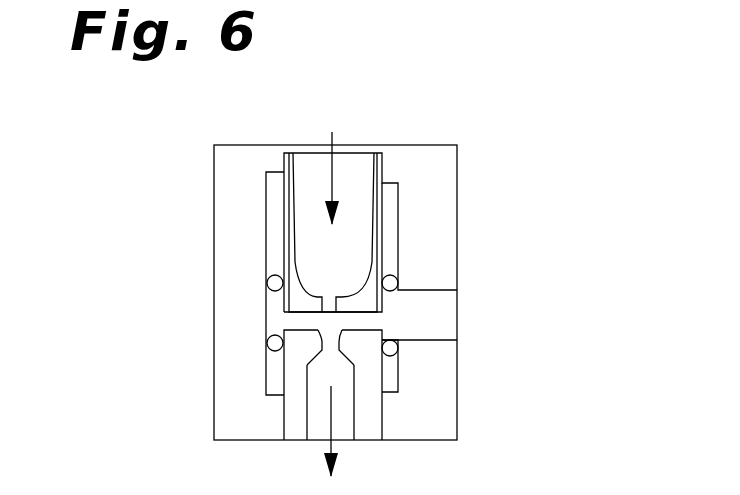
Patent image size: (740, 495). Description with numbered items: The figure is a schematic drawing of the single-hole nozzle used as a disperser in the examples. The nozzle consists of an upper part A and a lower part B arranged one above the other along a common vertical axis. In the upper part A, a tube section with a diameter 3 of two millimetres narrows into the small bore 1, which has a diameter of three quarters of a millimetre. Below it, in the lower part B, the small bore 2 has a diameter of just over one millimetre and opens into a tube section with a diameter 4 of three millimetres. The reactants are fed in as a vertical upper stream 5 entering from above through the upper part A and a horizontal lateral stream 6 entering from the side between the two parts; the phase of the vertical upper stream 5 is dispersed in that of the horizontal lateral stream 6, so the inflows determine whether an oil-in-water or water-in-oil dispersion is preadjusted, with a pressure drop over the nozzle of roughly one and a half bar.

The small bore of the upper part 1 is at (305, 300).
The small bore of the lower part 2 is at (306, 345).
The diameter of the tube section in the upper part 3 is at (281, 159).
The diameter of the tube section in the lower part 4 is at (311, 430).
The vertical upper stream 5 is at (340, 149).
The horizontal lateral stream 6 is at (411, 314).
The upper part of the nozzle A is at (397, 230).
The lower part of the nozzle B is at (384, 398).